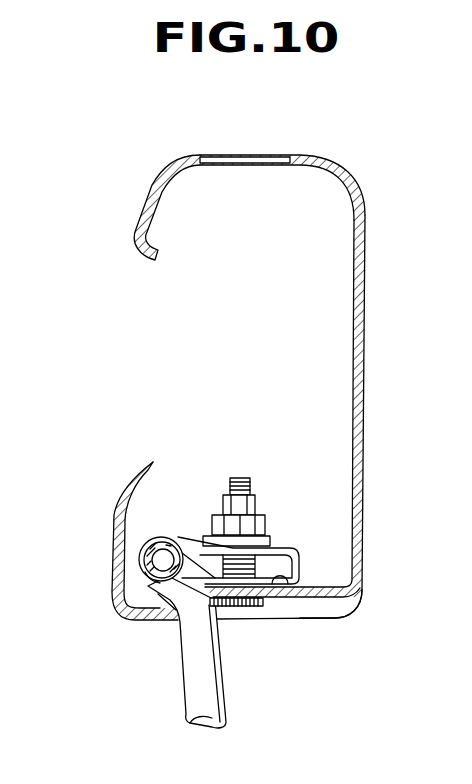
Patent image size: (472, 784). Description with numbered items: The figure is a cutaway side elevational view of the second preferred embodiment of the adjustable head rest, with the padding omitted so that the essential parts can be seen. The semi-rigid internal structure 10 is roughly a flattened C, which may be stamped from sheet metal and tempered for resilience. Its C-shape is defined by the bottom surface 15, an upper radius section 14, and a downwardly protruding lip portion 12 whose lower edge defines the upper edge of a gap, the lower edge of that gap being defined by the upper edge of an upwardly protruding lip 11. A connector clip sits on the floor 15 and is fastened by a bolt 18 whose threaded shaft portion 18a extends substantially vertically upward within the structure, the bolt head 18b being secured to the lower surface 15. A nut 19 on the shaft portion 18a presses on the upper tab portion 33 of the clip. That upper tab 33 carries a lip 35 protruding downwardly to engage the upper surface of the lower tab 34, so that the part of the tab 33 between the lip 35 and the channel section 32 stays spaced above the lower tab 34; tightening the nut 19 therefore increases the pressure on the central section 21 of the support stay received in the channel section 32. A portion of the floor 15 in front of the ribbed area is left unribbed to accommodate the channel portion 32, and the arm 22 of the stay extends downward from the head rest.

The semi-rigid internal structure 10 is at (366, 330).
The upwardly protruding lip 11 is at (117, 516).
The downwardly protruding lip portion 12 is at (138, 208).
The upper radius section 14 is at (303, 157).
The bottom surface 15 is at (166, 612).
The bolt 18 is at (262, 550).
The threaded shaft portion 18a is at (265, 546).
The bolt head 18b is at (262, 602).
The nut 19 is at (222, 162).
The central section of the stay 21 is at (168, 537).
The arm 22 is at (228, 688).
The channel section 32 is at (148, 590).
The upper tab portion 33 is at (283, 547).
The lower tab 34 is at (301, 619).
The lip 35 is at (305, 581).